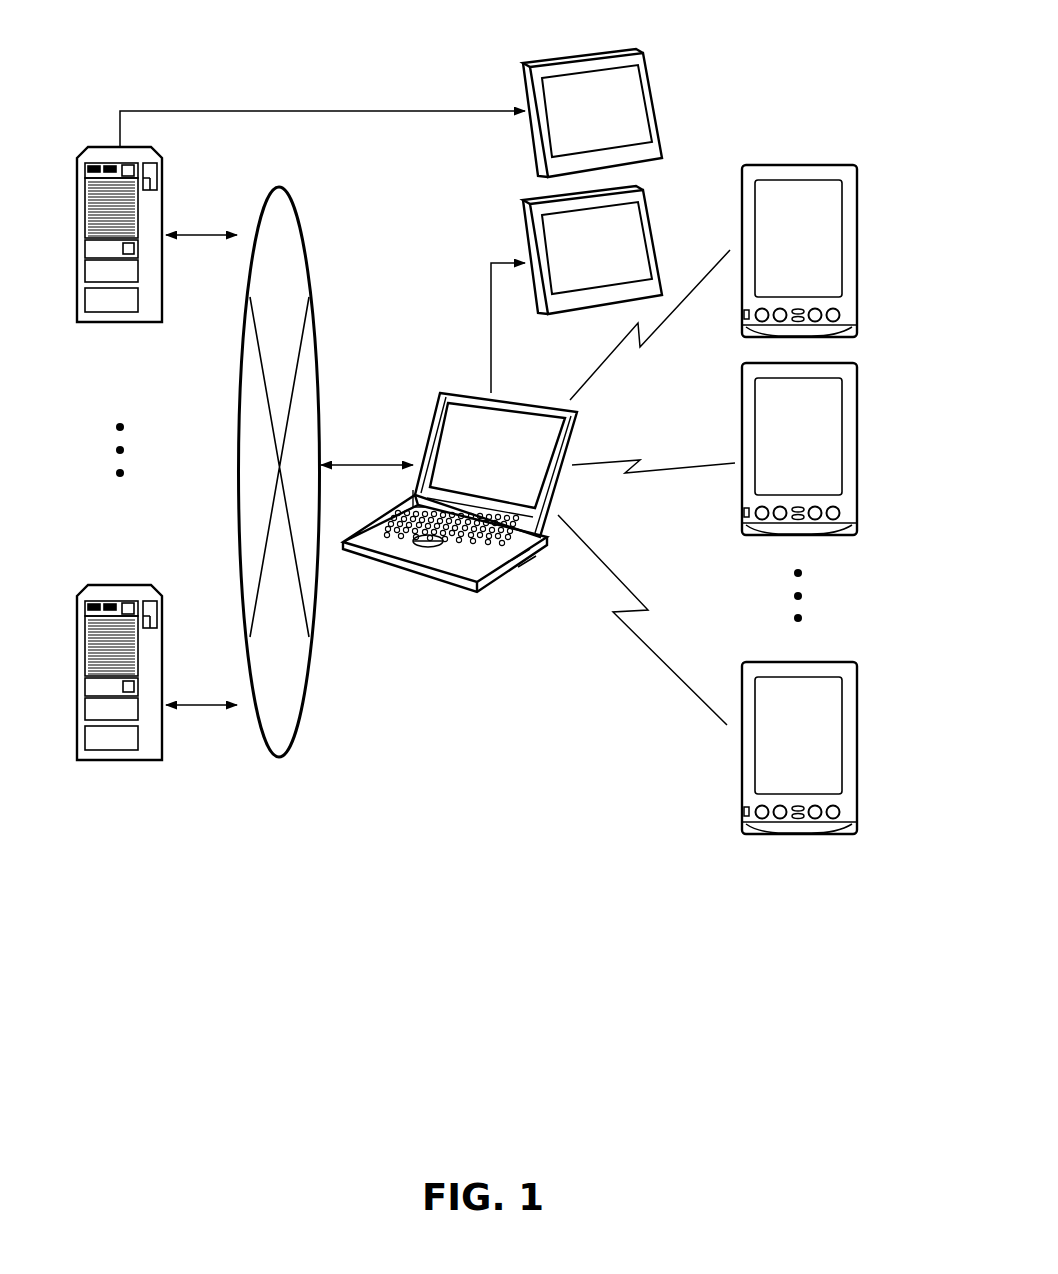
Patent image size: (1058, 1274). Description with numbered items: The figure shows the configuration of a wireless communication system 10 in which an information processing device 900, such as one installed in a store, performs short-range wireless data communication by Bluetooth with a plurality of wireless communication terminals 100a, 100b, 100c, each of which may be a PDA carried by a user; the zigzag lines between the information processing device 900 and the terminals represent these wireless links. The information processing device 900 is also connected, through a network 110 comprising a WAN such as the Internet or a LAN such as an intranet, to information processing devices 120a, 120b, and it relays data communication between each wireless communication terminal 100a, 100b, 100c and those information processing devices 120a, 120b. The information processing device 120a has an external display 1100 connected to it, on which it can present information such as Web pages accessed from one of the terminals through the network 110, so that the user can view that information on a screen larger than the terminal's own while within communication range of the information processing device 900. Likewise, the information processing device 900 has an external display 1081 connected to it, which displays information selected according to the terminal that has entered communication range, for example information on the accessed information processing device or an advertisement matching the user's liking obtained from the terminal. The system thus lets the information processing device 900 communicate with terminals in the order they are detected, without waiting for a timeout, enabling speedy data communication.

The wireless communication system 10 is at (840, 37).
The wireless communication terminal 100a is at (852, 223).
The wireless communication terminal 100b is at (850, 425).
The wireless communication terminal 100c is at (850, 736).
The network 110 is at (301, 224).
The information processing device 120a is at (118, 322).
The information processing device 120b is at (118, 760).
The information processing device 900 is at (500, 582).
The external display 1081 is at (660, 252).
The external display 1100 is at (660, 122).